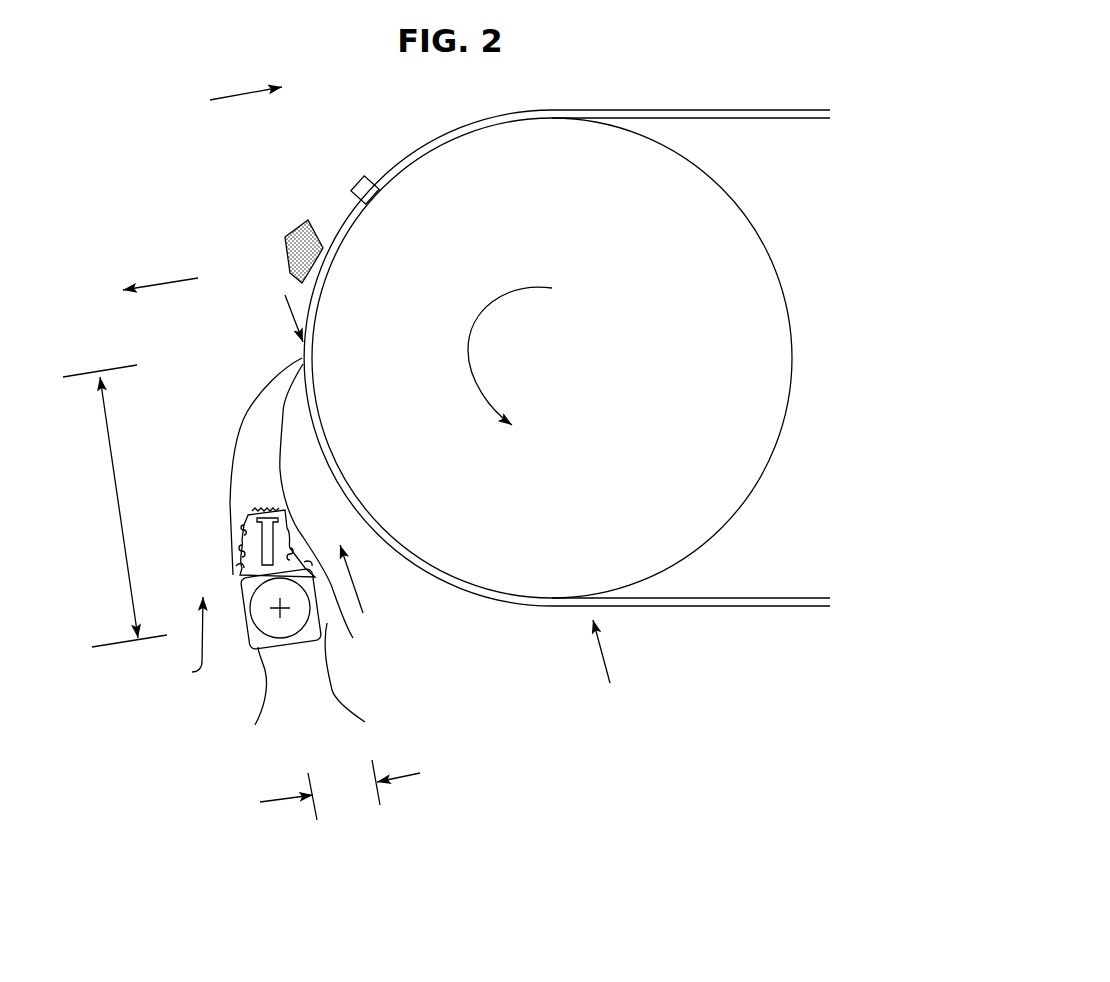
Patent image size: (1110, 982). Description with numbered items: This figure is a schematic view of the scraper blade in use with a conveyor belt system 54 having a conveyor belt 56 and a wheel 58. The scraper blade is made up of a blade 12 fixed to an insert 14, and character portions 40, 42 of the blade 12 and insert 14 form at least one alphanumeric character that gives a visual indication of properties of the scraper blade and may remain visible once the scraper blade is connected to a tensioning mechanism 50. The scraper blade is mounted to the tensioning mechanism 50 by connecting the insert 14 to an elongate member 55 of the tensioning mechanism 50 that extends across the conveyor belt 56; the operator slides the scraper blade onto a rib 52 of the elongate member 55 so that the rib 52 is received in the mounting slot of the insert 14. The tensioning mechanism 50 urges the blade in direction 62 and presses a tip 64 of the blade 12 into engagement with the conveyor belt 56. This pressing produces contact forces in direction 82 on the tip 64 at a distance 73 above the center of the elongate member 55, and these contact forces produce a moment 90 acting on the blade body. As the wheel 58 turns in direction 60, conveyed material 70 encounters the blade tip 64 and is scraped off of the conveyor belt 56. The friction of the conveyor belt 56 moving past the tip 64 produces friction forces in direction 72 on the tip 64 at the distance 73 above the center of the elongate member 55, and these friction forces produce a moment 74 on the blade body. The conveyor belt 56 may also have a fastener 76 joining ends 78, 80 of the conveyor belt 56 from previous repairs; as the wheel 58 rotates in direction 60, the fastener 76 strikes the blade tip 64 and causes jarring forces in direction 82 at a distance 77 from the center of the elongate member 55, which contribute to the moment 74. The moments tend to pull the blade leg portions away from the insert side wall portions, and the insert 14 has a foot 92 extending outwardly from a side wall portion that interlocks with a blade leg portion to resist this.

The blade 12 is at (248, 467).
The insert 14 is at (248, 523).
The character portion 40 is at (270, 503).
The character portion 42 is at (250, 513).
The tensioning mechanism 50 is at (313, 645).
The rib 52 is at (250, 698).
The conveyor belt system 54 is at (608, 665).
The elongate member 55 is at (353, 685).
The conveyor belt 56 is at (708, 111).
The wheel 58 is at (734, 223).
The direction 60 is at (537, 288).
The direction 62 is at (233, 95).
The tip 64 is at (300, 358).
The conveyed material 70 is at (285, 247).
The direction 72 is at (288, 305).
The distance 73 is at (122, 540).
The moment 74 is at (187, 646).
The fastener 76 is at (358, 185).
The distance 77 is at (403, 783).
The end 78 is at (350, 220).
The end 80 is at (395, 170).
The direction 82 is at (177, 280).
The moment 90 is at (362, 590).
The foot 92 is at (238, 552).